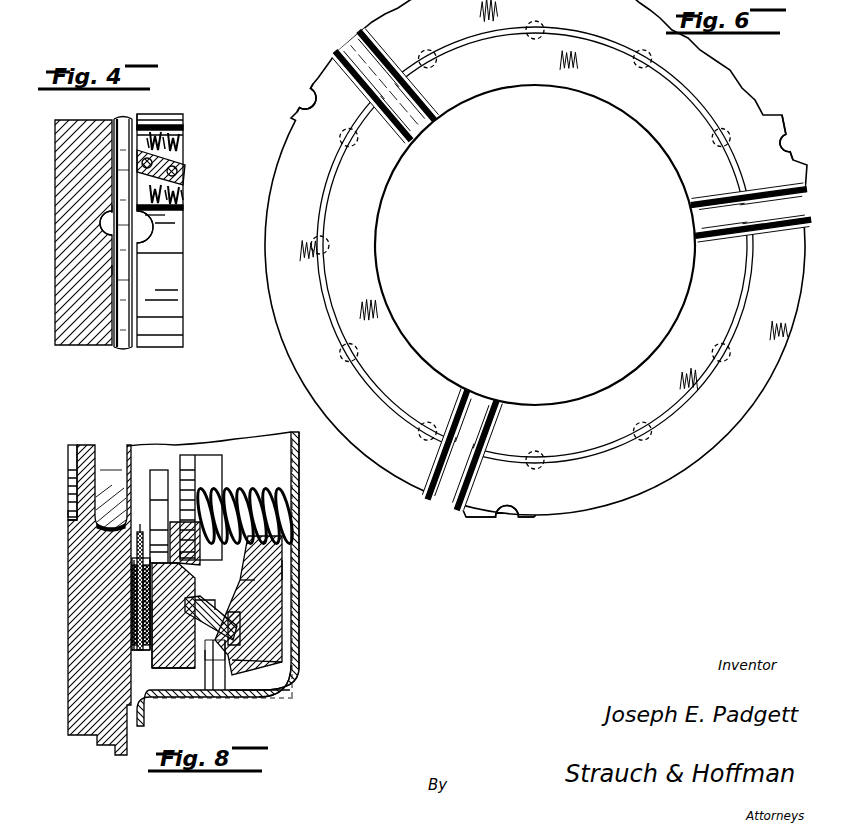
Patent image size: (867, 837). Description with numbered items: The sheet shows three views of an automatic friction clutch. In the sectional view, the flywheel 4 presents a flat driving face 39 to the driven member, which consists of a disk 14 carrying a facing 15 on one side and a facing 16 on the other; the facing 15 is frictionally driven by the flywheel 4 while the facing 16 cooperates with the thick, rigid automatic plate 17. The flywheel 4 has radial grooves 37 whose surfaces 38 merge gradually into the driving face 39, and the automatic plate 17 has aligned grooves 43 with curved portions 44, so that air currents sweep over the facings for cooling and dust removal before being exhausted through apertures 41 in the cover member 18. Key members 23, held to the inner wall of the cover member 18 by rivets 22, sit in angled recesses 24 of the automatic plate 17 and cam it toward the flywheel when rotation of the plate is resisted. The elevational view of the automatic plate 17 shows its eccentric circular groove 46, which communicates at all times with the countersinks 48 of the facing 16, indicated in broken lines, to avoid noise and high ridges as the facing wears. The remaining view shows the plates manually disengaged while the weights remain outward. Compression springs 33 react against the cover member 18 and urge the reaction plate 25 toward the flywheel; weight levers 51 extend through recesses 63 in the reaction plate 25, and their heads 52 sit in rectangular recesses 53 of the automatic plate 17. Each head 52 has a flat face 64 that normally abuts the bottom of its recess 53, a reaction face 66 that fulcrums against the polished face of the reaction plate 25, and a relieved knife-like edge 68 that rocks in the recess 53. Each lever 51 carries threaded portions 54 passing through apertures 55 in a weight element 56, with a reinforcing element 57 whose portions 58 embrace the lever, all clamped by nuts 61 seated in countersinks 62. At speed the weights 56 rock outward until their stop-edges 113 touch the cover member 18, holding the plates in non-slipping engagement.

In FIG. 4, the flywheel 4 is at (72, 173).
In FIG. 8, the flywheel 4 is at (128, 591).
In FIG. 4, the disk 14 is at (125, 118).
In FIG. 8, the disk 14 is at (140, 532).
In FIG. 4, the facing 15 is at (116, 120).
In FIG. 8, the facing 15 is at (140, 628).
In FIG. 4, the facing 16 is at (140, 122).
In FIG. 8, the facing 16 is at (148, 655).
In FIG. 4, the automatic plate 17 is at (165, 268).
In FIG. 6, the automatic plate 17 is at (410, 358).
In FIG. 8, the automatic plate 17 is at (183, 668).
In FIG. 8, the cover member 18 is at (262, 590).
In FIG. 4, the rivets 22 is at (185, 173).
In FIG. 4, the key members 23 is at (176, 168).
In FIG. 4, the recesses 24 is at (150, 160).
In FIG. 6, the recesses 24 is at (308, 97).
In FIG. 8, the reaction plate 25 is at (210, 468).
In FIG. 8, the compression springs 33 is at (258, 488).
In FIG. 4, the grooves 37 is at (105, 230).
In FIG. 4, the surfaces 38 is at (110, 208).
In FIG. 4, the driving face 39 is at (112, 272).
In FIG. 8, the apertures 41 is at (200, 645).
In FIG. 4, the grooves 43 is at (156, 226).
In FIG. 6, the grooves 43 is at (425, 120).
In FIG. 4, the curved portions 44 is at (140, 247).
In FIG. 6, the curved portions 44 is at (432, 92).
In FIG. 6, the circular groove 46 is at (318, 200).
In FIG. 6, the countersinks 48 is at (332, 244).
In FIG. 8, the weight levers 51 is at (208, 660).
In FIG. 8, the heads 52 is at (133, 650).
In FIG. 8, the rectangular recesses 53 is at (168, 558).
In FIG. 8, the threaded portions 54 is at (288, 693).
In FIG. 8, the apertures 55 is at (242, 615).
In FIG. 8, the weight element 56 is at (262, 552).
In FIG. 8, the reinforcing element 57 is at (232, 660).
In FIG. 8, the portions 58 is at (240, 602).
In FIG. 8, the nuts 61 is at (268, 630).
In FIG. 8, the countersinks 62 is at (272, 664).
In FIG. 8, the recesses 63 is at (215, 661).
In FIG. 8, the flat faces 64 is at (150, 612).
In FIG. 8, the reaction faces 66 is at (270, 572).
In FIG. 8, the knife-like edges 68 is at (170, 668).
In FIG. 8, the stop-edges 113 is at (252, 692).